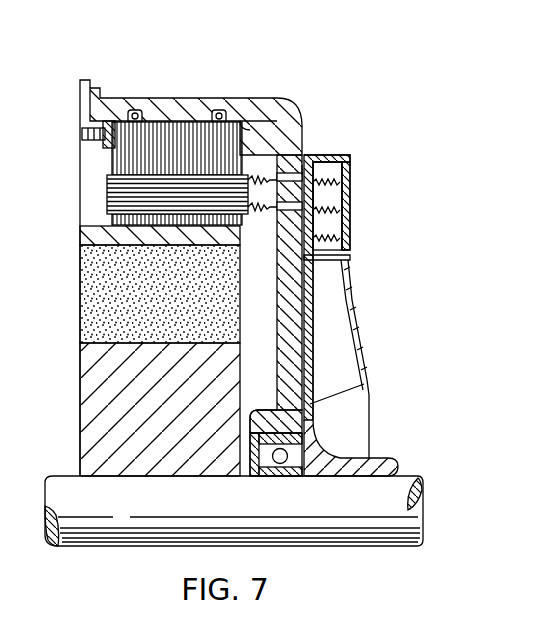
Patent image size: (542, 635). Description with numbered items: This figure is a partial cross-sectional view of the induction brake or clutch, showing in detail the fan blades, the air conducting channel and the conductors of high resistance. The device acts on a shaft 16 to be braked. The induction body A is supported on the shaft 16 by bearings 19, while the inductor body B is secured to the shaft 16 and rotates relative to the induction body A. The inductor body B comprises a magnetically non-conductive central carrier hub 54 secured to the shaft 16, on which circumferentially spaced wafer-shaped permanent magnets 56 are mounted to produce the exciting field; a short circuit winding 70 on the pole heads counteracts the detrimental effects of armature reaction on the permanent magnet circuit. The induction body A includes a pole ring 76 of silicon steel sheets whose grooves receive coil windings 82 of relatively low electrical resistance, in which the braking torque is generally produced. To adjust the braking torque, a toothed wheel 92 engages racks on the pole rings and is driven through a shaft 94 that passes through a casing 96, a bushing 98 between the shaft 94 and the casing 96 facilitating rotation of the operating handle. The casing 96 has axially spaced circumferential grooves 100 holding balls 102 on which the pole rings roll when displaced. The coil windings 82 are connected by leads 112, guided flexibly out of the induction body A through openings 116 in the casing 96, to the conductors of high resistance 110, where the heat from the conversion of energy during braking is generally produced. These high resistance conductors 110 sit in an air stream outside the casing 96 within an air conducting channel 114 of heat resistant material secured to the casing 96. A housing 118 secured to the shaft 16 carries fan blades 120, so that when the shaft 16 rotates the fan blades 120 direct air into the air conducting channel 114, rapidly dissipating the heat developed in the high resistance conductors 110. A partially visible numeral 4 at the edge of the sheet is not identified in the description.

The shaft 94 is at (82, 92).
The bushing 98 is at (100, 93).
The circumferential grooves 100 is at (222, 106).
The balls 102 is at (253, 100).
The casing 96 is at (293, 117).
The openings 116 is at (310, 160).
The conductors of high resistance 110 is at (343, 239).
The air conducting channel 114 is at (348, 240).
The leads 112 is at (275, 186).
The fan blades 120 is at (341, 309).
The housing 118 is at (380, 467).
The bearings 19 is at (282, 464).
The shaft to be braked 16 is at (92, 529).
The central carrier hub 54 is at (88, 415).
The permanent magnets 56 is at (90, 288).
The short circuit winding 70 is at (92, 238).
The coil windings 82 is at (112, 203).
The pole ring 76 is at (118, 164).
The toothed wheel 92 is at (82, 136).
The induction body A is at (198, 89).
The inductor body B is at (76, 354).
The frame 4 is at (5, 483).